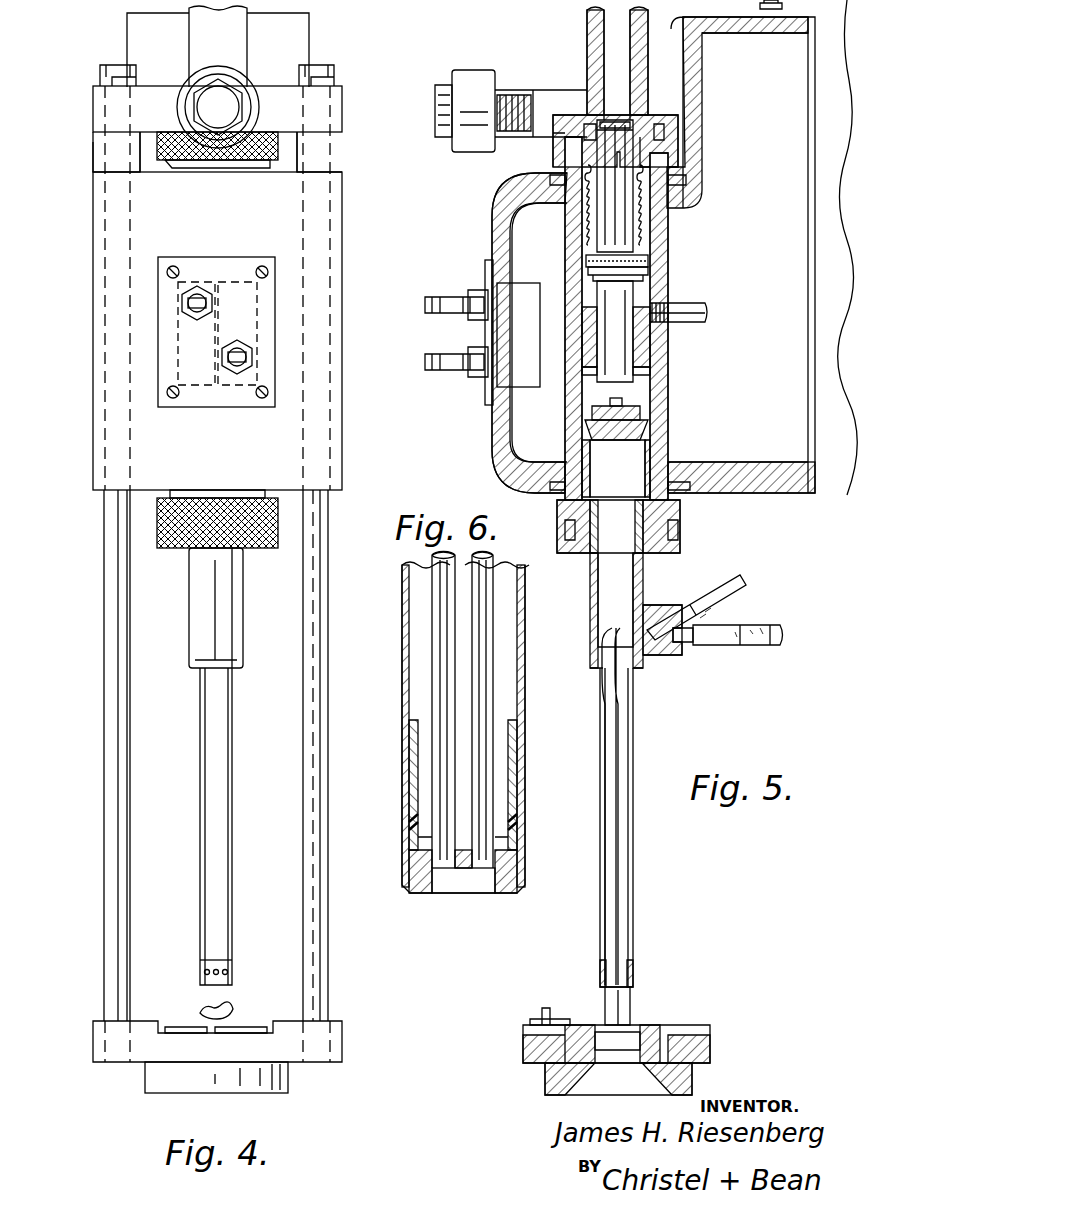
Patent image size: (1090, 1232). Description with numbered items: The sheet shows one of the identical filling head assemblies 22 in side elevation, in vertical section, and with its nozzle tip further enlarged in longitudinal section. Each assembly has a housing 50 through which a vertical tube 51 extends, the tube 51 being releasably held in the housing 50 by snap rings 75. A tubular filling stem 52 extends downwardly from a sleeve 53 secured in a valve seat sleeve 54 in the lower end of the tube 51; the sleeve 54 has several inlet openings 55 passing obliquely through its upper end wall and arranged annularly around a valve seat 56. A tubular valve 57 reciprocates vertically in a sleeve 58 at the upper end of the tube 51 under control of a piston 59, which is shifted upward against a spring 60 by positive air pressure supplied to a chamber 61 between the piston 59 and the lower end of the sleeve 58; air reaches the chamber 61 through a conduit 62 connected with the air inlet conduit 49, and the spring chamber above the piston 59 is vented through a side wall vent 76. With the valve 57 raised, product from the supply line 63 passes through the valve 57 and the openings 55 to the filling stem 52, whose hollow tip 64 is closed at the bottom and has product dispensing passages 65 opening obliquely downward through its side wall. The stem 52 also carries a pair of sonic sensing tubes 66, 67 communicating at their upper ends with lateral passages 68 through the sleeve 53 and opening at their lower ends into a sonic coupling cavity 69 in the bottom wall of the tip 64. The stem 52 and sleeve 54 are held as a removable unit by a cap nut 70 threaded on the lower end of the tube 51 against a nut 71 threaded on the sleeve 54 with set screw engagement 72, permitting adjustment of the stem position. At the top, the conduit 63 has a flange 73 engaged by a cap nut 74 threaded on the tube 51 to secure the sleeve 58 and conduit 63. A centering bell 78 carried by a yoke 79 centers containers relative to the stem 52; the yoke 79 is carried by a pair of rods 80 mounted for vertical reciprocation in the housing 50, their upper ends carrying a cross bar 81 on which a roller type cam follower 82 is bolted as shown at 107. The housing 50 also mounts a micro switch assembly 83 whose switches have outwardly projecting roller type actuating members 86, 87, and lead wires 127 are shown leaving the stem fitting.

In FIG. 4, the filling head assembly 22 is at (84, 373).
In FIG. 5, the filling head assembly 22 is at (481, 441).
In FIG. 5, the air inlet conduit 49 is at (785, 18).
In FIG. 4, the housing 50 is at (93, 200).
In FIG. 5, the housing 50 is at (504, 179).
In FIG. 5, the vertical tube 51 is at (667, 402).
In FIG. 4, the tubular filling stem 52 is at (232, 815).
In FIG. 6, the tubular filling stem 52 is at (525, 672).
In FIG. 5, the tubular filling stem 52 is at (633, 710).
In FIG. 4, the sleeve 53 is at (192, 616).
In FIG. 5, the sleeve 53 is at (590, 600).
In FIG. 5, the valve seat sleeve 54 is at (648, 450).
In FIG. 5, the inlet openings 55 is at (658, 420).
In FIG. 5, the valve seat 56 is at (634, 400).
In FIG. 5, the tubular valve 57 is at (652, 348).
In FIG. 5, the sleeve 58 is at (654, 314).
In FIG. 5, the piston 59 is at (586, 260).
In FIG. 5, the spring 60 is at (640, 217).
In FIG. 5, the chamber 61 is at (654, 274).
In FIG. 5, the conduit 62 is at (695, 306).
In FIG. 4, the supply line 63 is at (189, 26).
In FIG. 5, the supply line 63 is at (587, 20).
In FIG. 6, the hollow tip 64 is at (517, 790).
In FIG. 6, the product dispensing passages 65 is at (409, 846).
In FIG. 5, the product dispensing passages 65 is at (599, 974).
In FIG. 6, the sonic sensing tube 66 is at (432, 602).
In FIG. 6, the sonic sensing tube 67 is at (472, 628).
In FIG. 5, the lateral passages 68 is at (656, 650).
In FIG. 6, the sonic coupling cavity 69 is at (465, 878).
In FIG. 5, the sonic coupling cavity 69 is at (630, 990).
In FIG. 4, the cap nut 70 is at (157, 517).
In FIG. 5, the cap nut 70 is at (680, 516).
In FIG. 5, the nut 71 is at (668, 538).
In FIG. 5, the set screw engagement 72 is at (565, 536).
In FIG. 5, the flange 73 is at (678, 134).
In FIG. 4, the cap nut 74 is at (157, 145).
In FIG. 5, the cap nut 74 is at (556, 150).
In FIG. 5, the snap rings 75 is at (685, 190).
In FIG. 5, the side wall vent 76 is at (668, 242).
In FIG. 4, the centering bell 78 is at (160, 1096).
In FIG. 5, the centering bell 78 is at (688, 1076).
In FIG. 4, the yoke 79 is at (93, 1034).
In FIG. 5, the yoke 79 is at (710, 1046).
In FIG. 4, the rods 80 is at (127, 733).
In FIG. 4, the cross bar 81 is at (337, 98).
In FIG. 5, the cross bar 81 is at (522, 98).
In FIG. 4, the roller type cam follower 82 is at (194, 90).
In FIG. 5, the roller type cam follower 82 is at (480, 74).
In FIG. 5, the micro switch assembly 83 is at (524, 352).
In FIG. 4, the actuating member 86 is at (197, 294).
In FIG. 5, the actuating member 86 is at (446, 282).
In FIG. 4, the actuating member 87 is at (233, 376).
In FIG. 5, the actuating member 87 is at (429, 374).
In FIG. 4, the bolt 107 is at (218, 107).
In FIG. 5, the bolt 107 is at (440, 104).
In FIG. 5, the lead wires 127 is at (746, 592).